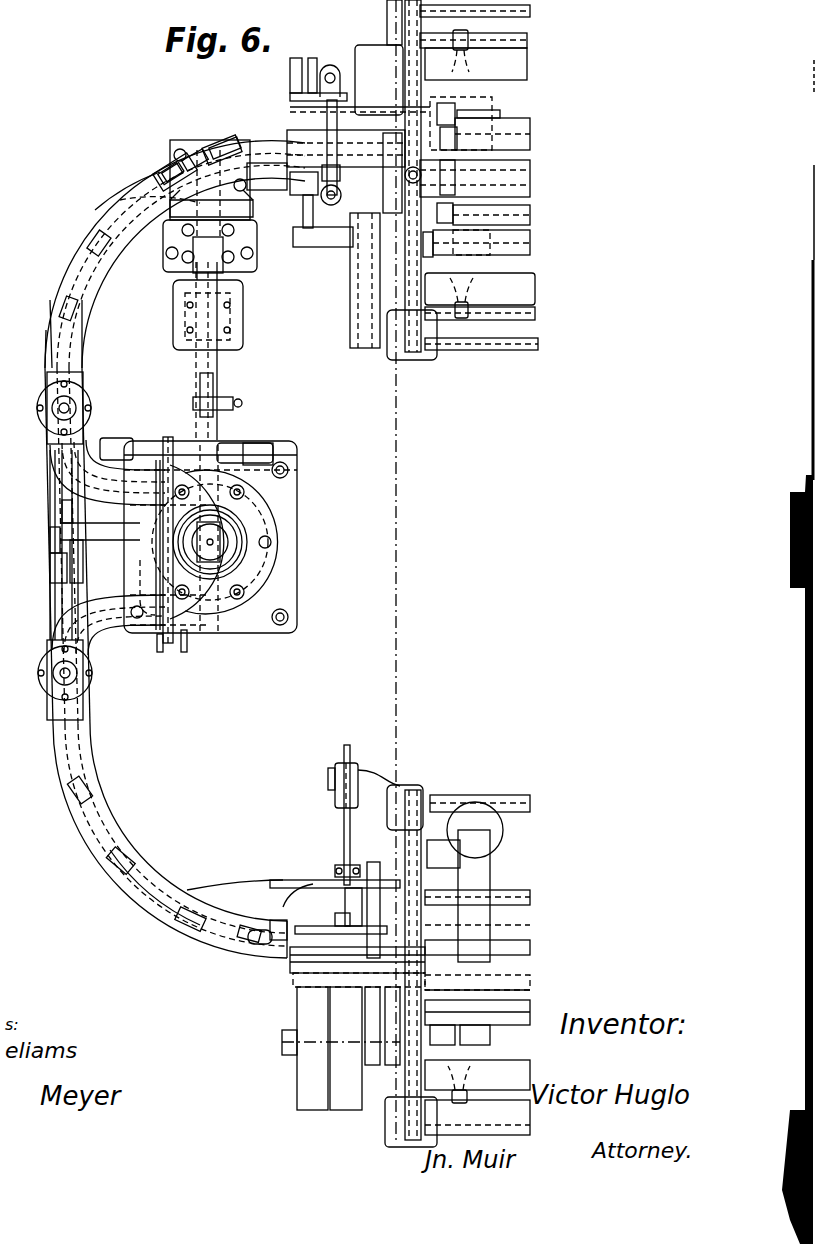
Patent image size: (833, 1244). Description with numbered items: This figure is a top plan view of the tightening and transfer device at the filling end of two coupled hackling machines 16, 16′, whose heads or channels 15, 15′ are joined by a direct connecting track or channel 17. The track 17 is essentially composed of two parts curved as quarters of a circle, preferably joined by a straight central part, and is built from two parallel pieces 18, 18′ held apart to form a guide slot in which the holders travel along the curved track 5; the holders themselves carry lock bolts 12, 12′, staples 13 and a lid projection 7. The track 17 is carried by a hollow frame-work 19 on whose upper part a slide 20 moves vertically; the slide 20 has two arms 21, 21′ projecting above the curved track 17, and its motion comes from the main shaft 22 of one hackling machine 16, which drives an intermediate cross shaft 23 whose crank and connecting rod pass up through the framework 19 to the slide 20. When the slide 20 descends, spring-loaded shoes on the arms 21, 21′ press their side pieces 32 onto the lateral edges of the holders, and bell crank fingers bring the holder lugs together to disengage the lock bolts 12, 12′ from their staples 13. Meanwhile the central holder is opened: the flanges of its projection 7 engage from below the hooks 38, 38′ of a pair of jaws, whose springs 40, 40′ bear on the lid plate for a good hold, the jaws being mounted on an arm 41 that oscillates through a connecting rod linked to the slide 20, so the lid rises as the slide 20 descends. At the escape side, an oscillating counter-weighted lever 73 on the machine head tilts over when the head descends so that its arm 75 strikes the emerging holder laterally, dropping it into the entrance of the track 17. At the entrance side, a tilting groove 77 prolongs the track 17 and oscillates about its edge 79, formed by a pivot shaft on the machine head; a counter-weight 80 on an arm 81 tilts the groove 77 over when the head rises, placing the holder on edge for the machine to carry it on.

The curved track 5 is at (262, 130).
The projection 7 is at (190, 152).
The lock bolt 12 is at (168, 162).
The lock bolt 12′ is at (216, 146).
The staple 13 is at (150, 182).
The head or channel 15 is at (488, 177).
The head or channel 15′ is at (493, 965).
The hackling machine 16 is at (393, 180).
The hackling machine 16′ is at (396, 966).
The direct connecting track or channel 17 is at (54, 344).
The parallel piece 18 is at (57, 320).
The parallel piece 18′ is at (86, 326).
The hollow frame-work 19 is at (252, 548).
The slide 20 is at (172, 652).
The arm 21 is at (55, 462).
The arm 21′ is at (54, 632).
The main shaft 22 is at (283, 188).
The intermediate cross shaft 23 is at (212, 362).
The side piece 32 is at (58, 522).
The hook 38 is at (55, 558).
The hook 38′ is at (60, 538).
The spring 40 is at (55, 578).
The spring 40′ is at (62, 596).
The arm 41 is at (60, 506).
The oscillating lever 73 is at (322, 113).
The arm 75 is at (328, 208).
The groove 77 is at (286, 892).
The edge 79 is at (290, 977).
The counter-weight 80 is at (336, 805).
The arm 81 is at (344, 852).